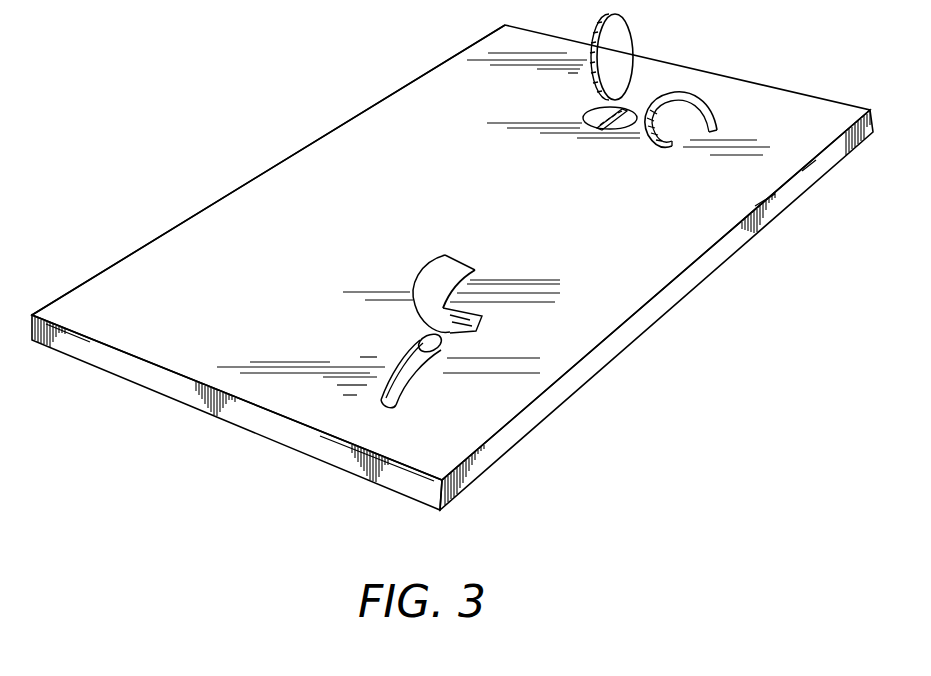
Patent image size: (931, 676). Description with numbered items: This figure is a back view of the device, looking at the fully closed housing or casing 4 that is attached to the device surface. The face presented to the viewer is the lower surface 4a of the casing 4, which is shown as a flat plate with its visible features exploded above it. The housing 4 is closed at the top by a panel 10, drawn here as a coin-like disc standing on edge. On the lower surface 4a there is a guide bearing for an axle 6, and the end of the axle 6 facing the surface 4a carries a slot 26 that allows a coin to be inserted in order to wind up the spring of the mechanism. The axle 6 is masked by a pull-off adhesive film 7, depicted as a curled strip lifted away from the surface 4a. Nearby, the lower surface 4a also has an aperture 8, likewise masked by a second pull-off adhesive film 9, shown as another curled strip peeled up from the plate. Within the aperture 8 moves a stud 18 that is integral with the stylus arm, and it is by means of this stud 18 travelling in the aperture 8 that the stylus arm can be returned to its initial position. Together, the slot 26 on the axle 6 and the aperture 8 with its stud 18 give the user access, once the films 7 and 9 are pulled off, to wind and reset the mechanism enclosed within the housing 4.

The housing 4 is at (226, 426).
The lower surface of the casing 4a is at (316, 182).
The axle 6 is at (598, 118).
The slot 26 is at (607, 127).
The panel 10 is at (611, 57).
The pull-off adhesive film 7 is at (712, 104).
The pull-off adhesive film 9 is at (430, 282).
The aperture 8 is at (400, 378).
The stud 18 is at (422, 341).